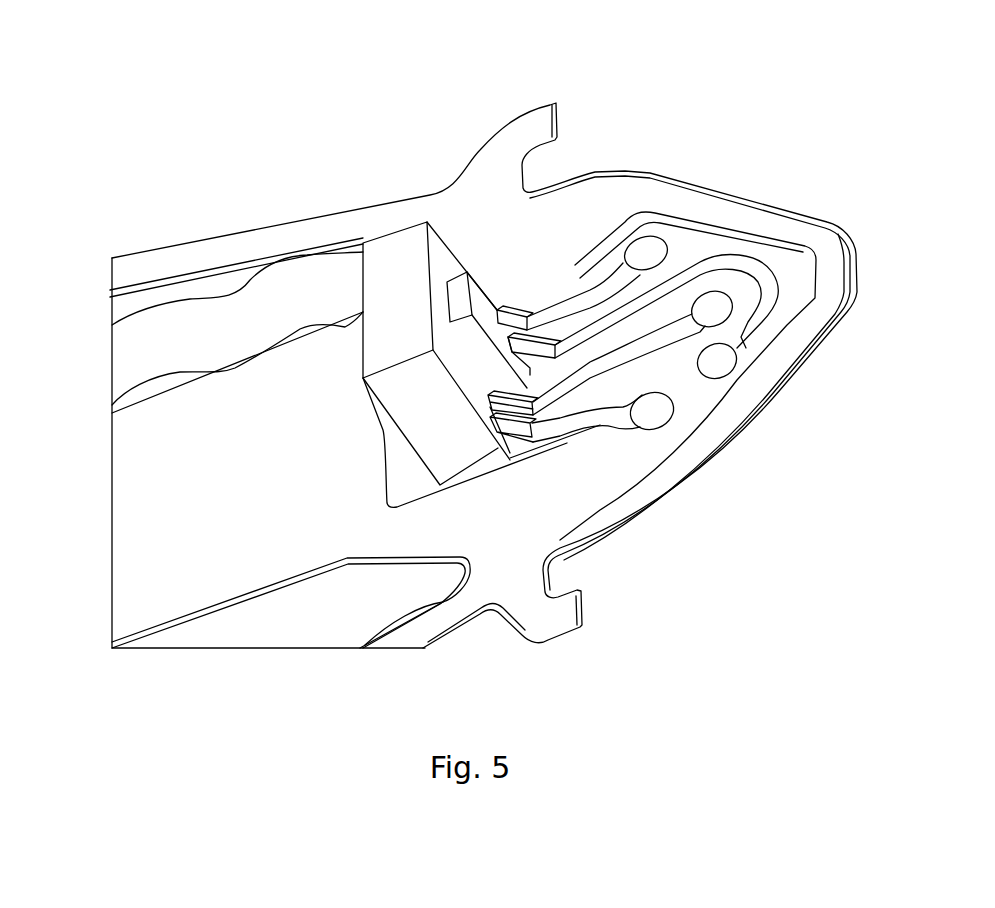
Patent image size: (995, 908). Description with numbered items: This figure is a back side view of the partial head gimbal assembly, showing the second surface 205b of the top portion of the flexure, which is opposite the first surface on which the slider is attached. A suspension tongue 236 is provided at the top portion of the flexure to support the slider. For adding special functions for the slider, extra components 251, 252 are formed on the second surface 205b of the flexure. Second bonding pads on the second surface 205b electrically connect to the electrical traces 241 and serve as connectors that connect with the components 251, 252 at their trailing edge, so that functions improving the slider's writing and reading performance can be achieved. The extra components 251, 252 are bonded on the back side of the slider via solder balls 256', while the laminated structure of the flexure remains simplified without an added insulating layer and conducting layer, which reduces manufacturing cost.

The suspension tongue 236 is at (307, 420).
The extra component 252 is at (397, 270).
The extra component 251 is at (483, 315).
The electrical traces 241 is at (592, 295).
The solder balls 256' is at (598, 470).
The second surface 205b is at (497, 512).